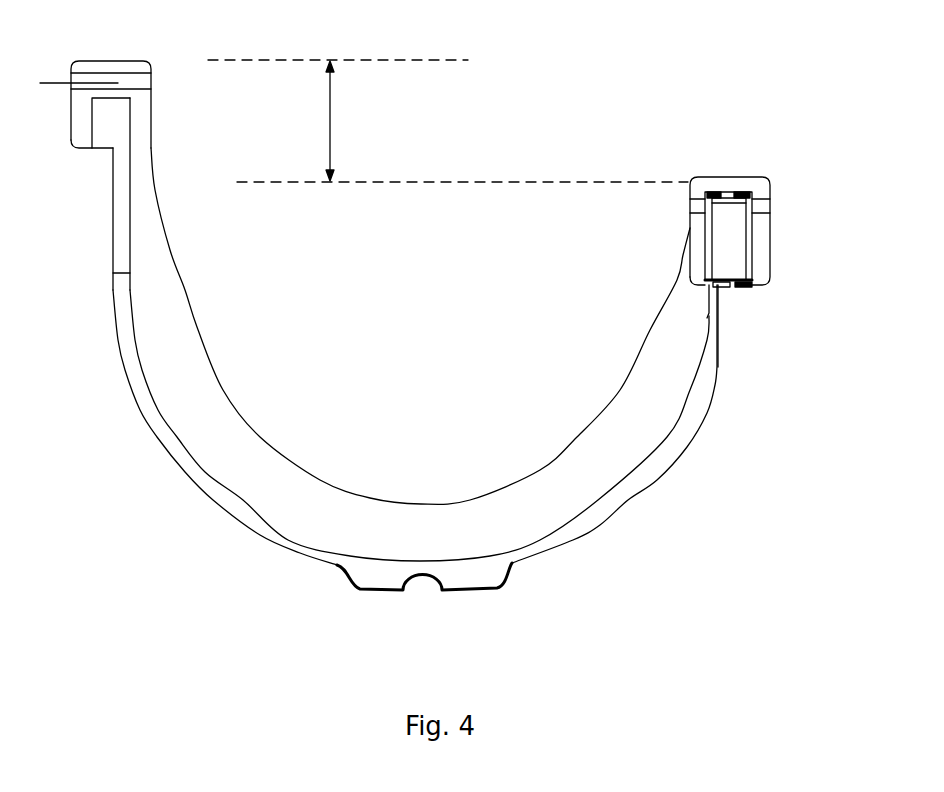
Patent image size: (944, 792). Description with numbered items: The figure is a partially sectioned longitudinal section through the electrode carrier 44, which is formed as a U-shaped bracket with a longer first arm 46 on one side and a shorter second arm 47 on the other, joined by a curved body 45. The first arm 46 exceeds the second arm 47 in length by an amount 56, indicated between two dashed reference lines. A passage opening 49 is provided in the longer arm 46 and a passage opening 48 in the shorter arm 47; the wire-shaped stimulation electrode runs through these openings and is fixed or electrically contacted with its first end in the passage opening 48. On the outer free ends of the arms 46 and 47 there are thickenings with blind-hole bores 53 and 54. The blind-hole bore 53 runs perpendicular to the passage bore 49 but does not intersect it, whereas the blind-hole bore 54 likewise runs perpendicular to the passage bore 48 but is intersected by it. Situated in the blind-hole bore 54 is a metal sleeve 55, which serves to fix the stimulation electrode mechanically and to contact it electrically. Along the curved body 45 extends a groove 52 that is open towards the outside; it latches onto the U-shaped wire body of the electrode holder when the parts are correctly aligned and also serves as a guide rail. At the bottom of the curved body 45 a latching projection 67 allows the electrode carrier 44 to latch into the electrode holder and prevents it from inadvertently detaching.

The electrode carrier 44 is at (425, 296).
The curved body 45 is at (342, 522).
The longer first arm 46 is at (198, 377).
The shorter second arm 47 is at (668, 367).
The passage opening 48 is at (760, 206).
The passage opening 49 is at (138, 83).
The groove 52 is at (288, 540).
The blind-hole bore 53 is at (117, 123).
The blind-hole bore 54 is at (747, 234).
The metal sleeve 55 is at (713, 260).
The amount 56 is at (331, 123).
The latching projection 67 is at (380, 575).